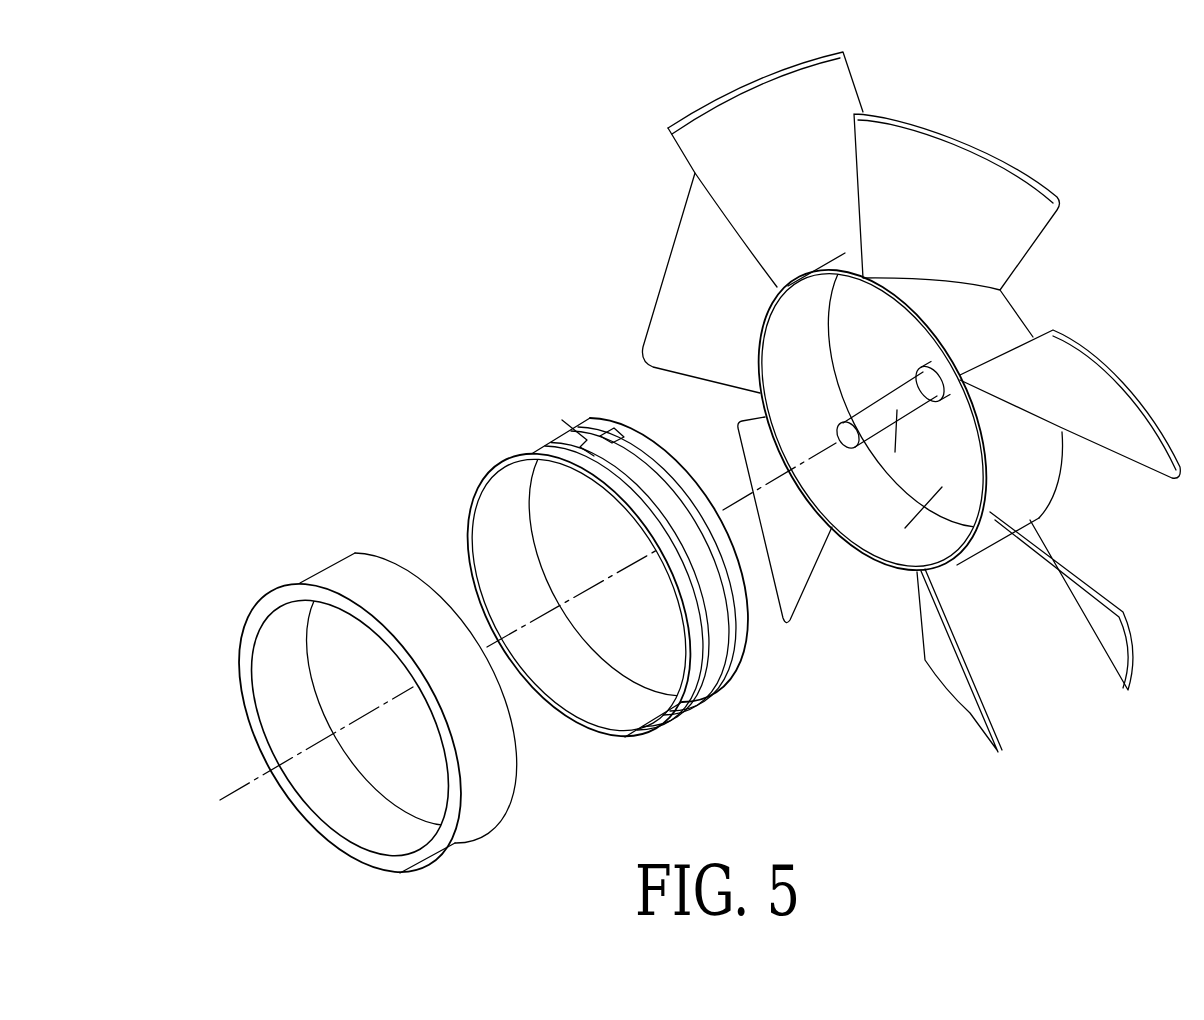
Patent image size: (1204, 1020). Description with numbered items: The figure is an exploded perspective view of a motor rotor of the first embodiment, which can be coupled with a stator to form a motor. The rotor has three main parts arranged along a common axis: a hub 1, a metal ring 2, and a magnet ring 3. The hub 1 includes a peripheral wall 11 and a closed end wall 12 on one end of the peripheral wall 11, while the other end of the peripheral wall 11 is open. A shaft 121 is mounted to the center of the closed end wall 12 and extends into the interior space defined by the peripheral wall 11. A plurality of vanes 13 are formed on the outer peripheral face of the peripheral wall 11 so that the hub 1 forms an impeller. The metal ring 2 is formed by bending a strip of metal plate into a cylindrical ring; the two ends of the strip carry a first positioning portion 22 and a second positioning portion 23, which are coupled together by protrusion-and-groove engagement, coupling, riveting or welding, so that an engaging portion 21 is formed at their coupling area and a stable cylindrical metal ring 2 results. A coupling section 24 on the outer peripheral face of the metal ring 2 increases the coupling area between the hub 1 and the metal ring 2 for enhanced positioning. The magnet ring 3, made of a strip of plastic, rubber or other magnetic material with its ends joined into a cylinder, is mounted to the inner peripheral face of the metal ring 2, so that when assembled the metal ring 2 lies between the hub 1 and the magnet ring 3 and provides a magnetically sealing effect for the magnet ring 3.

The hub 1 is at (911, 402).
The peripheral wall 11 is at (1007, 320).
The closed end wall 12 is at (903, 433).
The shaft 121 is at (845, 530).
The vanes 13 is at (1027, 223).
The metal ring 2 is at (614, 555).
The engaging portion 21 is at (613, 432).
The first positioning portion 22 is at (613, 442).
The second positioning portion 23 is at (562, 420).
The coupling section 24 is at (750, 637).
The magnet ring 3 is at (272, 570).